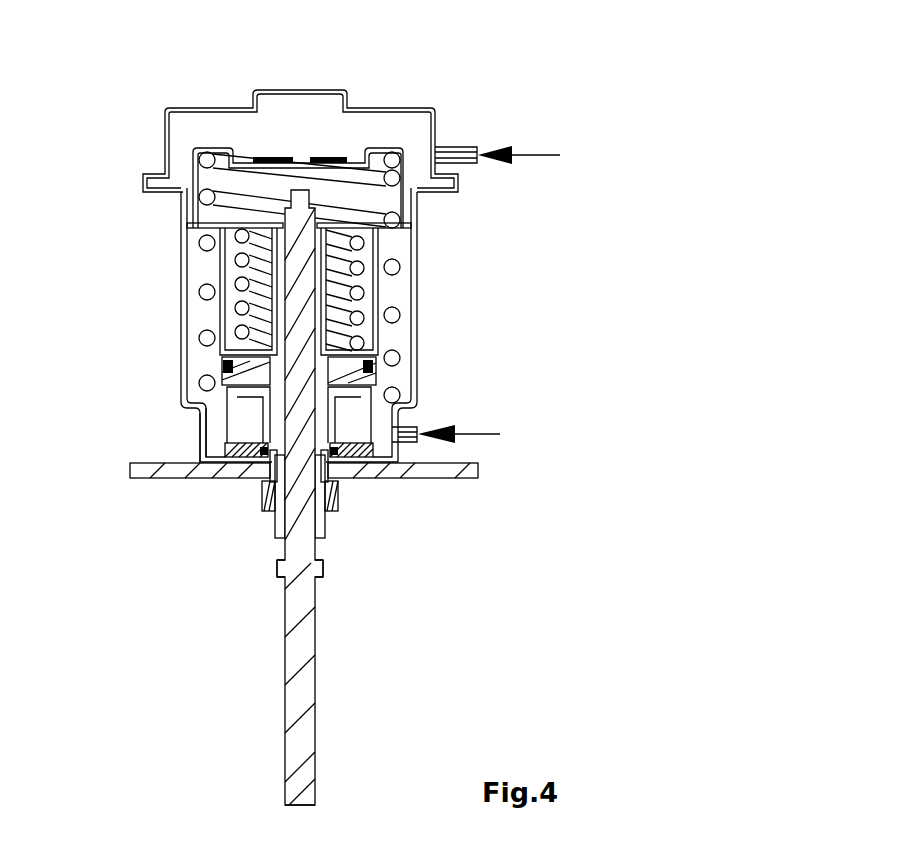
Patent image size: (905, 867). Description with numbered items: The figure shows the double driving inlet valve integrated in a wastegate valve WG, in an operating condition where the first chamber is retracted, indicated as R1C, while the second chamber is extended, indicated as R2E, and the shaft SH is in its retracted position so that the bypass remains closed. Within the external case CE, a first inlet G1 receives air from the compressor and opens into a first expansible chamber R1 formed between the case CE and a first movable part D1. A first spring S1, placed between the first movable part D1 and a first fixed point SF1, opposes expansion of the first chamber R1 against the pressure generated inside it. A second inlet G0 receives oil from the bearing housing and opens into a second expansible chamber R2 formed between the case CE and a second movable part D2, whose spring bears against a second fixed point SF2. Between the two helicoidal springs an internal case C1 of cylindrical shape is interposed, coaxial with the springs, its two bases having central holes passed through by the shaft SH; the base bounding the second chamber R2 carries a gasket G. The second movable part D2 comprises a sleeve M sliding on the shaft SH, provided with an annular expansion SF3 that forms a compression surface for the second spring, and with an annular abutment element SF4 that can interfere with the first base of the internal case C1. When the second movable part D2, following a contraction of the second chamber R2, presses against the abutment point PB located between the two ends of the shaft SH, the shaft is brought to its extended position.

The case CE is at (162, 110).
The retracted first chamber R1C is at (233, 135).
The first inlet G1 is at (478, 142).
The first movable part D1 is at (388, 147).
The first expansible chamber R1 is at (403, 143).
The abutment element SF4 is at (190, 216).
The internal case C1 is at (213, 270).
The first spring S1 is at (190, 297).
The first fixed point SF1 is at (192, 397).
The second fixed point SF2 is at (330, 222).
The annular expansion SF3 is at (388, 343).
The second movable part D2 is at (357, 368).
The second expansible chamber R2 is at (357, 440).
The gasket G is at (233, 393).
The extended second chamber R2E is at (338, 422).
The second inlet G0 is at (420, 447).
The sleeve M is at (275, 528).
The shaft SH is at (282, 577).
The abutment point PB is at (285, 560).
The wastegate valve WG is at (478, 562).